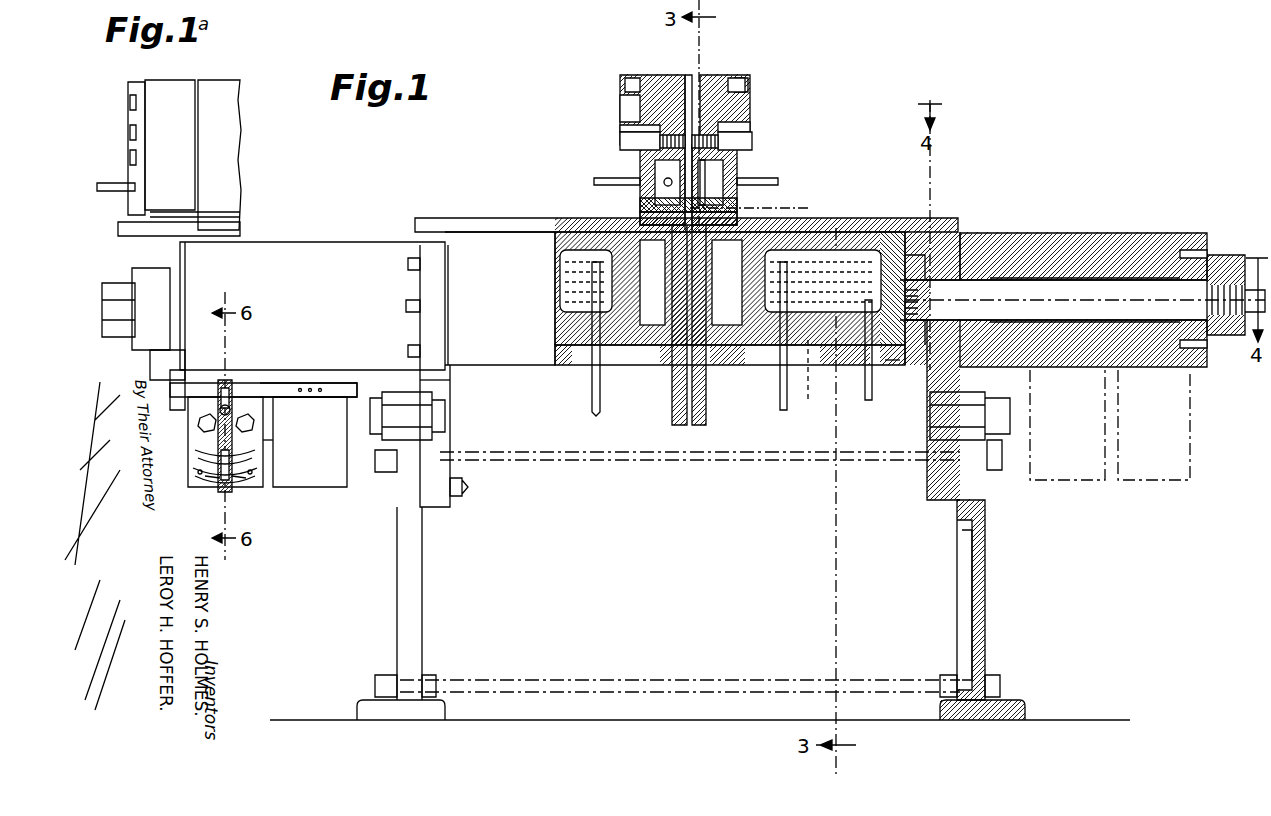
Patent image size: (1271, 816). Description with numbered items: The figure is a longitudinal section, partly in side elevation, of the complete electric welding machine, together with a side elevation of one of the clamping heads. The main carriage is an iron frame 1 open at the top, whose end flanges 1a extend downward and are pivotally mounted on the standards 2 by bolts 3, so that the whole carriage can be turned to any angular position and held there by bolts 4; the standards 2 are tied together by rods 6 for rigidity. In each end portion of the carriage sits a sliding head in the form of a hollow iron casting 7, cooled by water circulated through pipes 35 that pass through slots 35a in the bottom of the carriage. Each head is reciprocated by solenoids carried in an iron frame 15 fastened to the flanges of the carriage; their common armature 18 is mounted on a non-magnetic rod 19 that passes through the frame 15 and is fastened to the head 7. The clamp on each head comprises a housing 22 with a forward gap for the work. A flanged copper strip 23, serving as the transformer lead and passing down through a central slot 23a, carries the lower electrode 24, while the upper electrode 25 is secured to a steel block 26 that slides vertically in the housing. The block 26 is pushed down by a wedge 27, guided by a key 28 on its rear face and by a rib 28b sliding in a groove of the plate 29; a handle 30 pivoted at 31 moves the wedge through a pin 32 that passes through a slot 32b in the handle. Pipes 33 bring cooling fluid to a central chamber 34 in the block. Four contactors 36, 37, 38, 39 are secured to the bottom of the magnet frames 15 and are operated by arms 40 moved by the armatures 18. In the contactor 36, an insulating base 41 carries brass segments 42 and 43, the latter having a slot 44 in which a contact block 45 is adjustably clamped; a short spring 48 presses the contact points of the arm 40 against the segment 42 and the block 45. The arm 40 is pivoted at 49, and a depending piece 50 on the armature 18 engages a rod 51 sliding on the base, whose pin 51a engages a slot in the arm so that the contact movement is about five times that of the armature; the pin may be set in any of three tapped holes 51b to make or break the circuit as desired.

In FIG. 1, the iron frame 1 is at (569, 362).
In FIG. 1, the end flanges 1a is at (435, 374).
In FIG. 1, the standards 2 is at (408, 570).
In FIG. 1, the bolts 3 is at (468, 412).
In FIG. 1, the bolts 4 is at (470, 488).
In FIG. 1, the rods 6 is at (705, 462).
In FIG. 1, the hollow iron castings 7 is at (885, 265).
In FIG. 1, the iron frame 15 is at (1045, 238).
In FIG. 1, the common armature 18 is at (812, 358).
In FIG. 1, the rod 19 is at (103, 276).
In FIG. 1A, the housing 22 is at (193, 155).
In FIG. 1, the housing 22 is at (650, 77).
In FIG. 1, the flanged copper strip 23 is at (708, 393).
In FIG. 1, the central slot 23a is at (665, 360).
In FIG. 1, the lower electrode 24 is at (740, 222).
In FIG. 1, the upper electrode 25 is at (718, 203).
In FIG. 1, the steel block 26 is at (700, 178).
In FIG. 1, the wedge 27 is at (752, 127).
In FIG. 1, the key 28 is at (750, 84).
In FIG. 1, the rib 28b is at (700, 85).
In FIG. 1, the plate 29 is at (688, 78).
In FIG. 1, the handle 30 is at (620, 106).
In FIG. 1, the pivot 31 is at (625, 85).
In FIG. 1, the pin 32 is at (630, 143).
In FIG. 1, the slot 32b is at (622, 128).
In FIG. 1, the pipes 33 is at (740, 175).
In FIG. 1, the central chamber 34 is at (630, 172).
In FIG. 1, the pipes 35 is at (770, 412).
In FIG. 1, the slots 35a is at (892, 352).
In FIG. 1, the contactor 36 is at (268, 488).
In FIG. 1, the contactor 37 is at (310, 487).
In FIG. 1A, the contactor 38 is at (128, 118).
In FIG. 1, the contactor 38 is at (1075, 480).
In FIG. 1, the contactor 39 is at (1150, 480).
In FIG. 1, the arm 40 is at (236, 440).
In FIG. 1, the base 41 is at (200, 428).
In FIG. 1, the brass segment 42 is at (197, 451).
In FIG. 1, the brass segment 43 is at (196, 475).
In FIG. 1, the slot 44 is at (210, 480).
In FIG. 1, the contact block 45 is at (238, 480).
In FIG. 1, the short spring 48 is at (256, 450).
In FIG. 1, the pivot 49 is at (232, 395).
In FIG. 1, the depending piece 50 is at (170, 375).
In FIG. 1, the rod 51 is at (198, 383).
In FIG. 1, the pin 51a is at (228, 385).
In FIG. 1, the tapped holes 51b is at (305, 388).